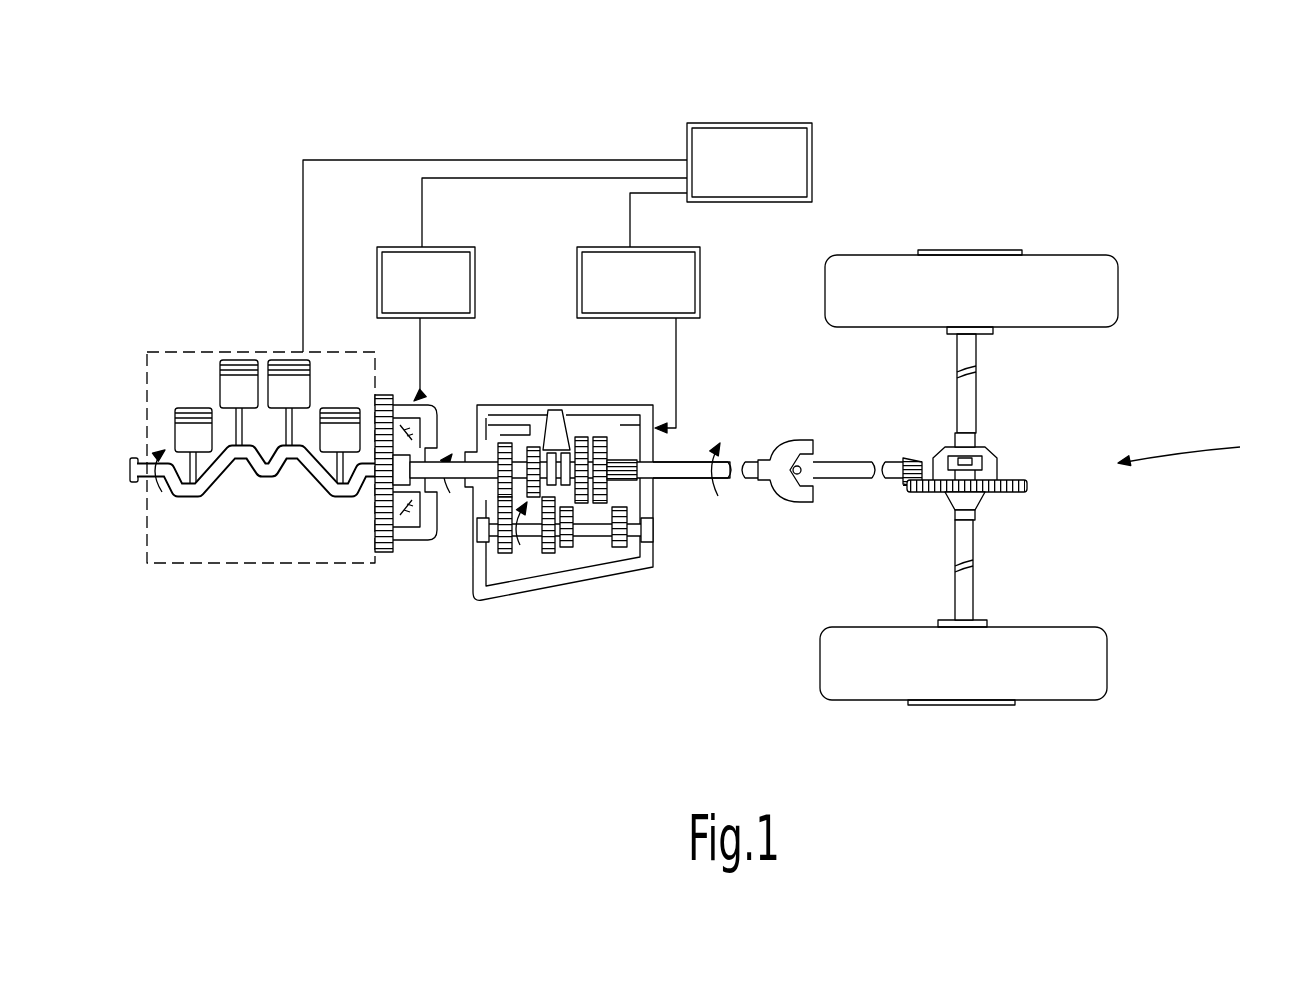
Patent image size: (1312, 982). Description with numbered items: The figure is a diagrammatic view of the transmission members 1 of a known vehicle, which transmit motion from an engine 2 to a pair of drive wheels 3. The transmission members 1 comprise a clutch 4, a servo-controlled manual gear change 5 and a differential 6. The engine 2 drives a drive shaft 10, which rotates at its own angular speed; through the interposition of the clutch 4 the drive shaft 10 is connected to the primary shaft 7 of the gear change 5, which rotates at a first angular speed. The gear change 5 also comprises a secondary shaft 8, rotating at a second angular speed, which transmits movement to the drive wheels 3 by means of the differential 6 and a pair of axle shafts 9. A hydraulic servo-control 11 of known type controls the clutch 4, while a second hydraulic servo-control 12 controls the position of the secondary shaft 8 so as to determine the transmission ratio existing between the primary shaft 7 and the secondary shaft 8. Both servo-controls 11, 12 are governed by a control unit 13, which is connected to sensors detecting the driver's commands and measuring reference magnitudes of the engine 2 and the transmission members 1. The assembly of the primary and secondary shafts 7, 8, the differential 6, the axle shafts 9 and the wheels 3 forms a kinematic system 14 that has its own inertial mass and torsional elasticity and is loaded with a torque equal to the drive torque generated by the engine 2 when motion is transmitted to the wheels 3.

The transmission members 1 is at (1186, 110).
The engine 2 is at (226, 345).
The drive wheels 3 is at (1048, 268).
The clutch 4 is at (416, 552).
The servo-controlled manual gear change 5 is at (508, 620).
The differential 6 is at (1000, 496).
The primary shaft 7 is at (632, 540).
The secondary shaft 8 is at (625, 478).
The axle shafts 9 is at (972, 405).
The drive shaft 10 is at (310, 478).
The hydraulic servo-control 11 is at (456, 268).
The hydraulic servo-control 12 is at (686, 268).
The control unit 13 is at (716, 135).
The kinematic system 14 is at (1267, 446).